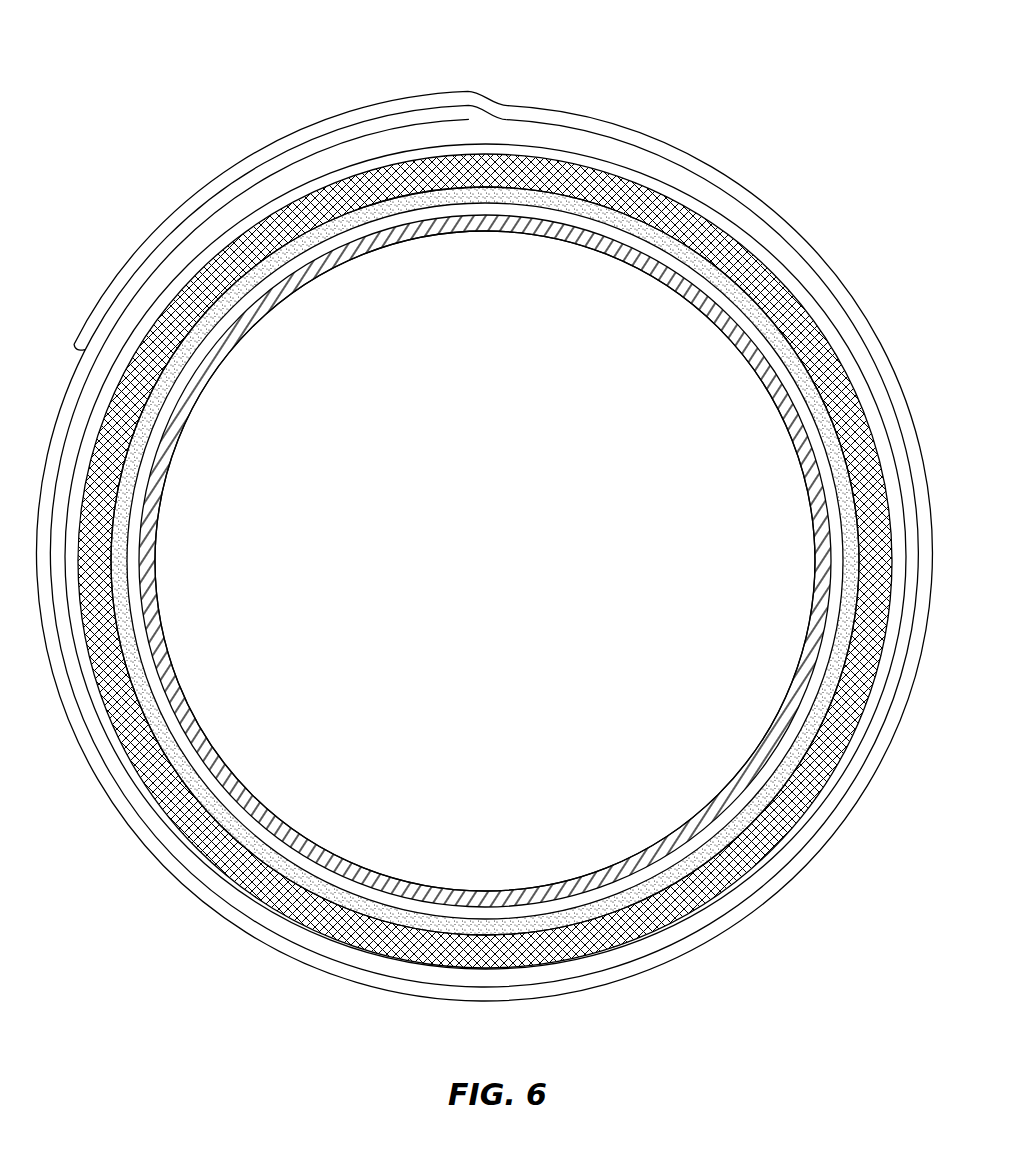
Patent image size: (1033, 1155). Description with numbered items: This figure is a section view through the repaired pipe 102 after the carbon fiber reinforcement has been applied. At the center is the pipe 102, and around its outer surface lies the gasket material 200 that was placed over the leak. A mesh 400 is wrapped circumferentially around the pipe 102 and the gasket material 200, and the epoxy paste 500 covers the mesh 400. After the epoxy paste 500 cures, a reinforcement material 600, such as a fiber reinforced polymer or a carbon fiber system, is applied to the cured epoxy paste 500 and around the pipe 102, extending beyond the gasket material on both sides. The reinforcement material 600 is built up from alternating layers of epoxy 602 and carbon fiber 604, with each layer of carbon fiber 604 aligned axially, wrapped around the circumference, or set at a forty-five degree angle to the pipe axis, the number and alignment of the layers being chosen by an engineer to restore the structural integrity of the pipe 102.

The reinforcement material 600 is at (853, 154).
The pipe 102 is at (478, 893).
The gasket material 200 is at (707, 852).
The mesh 400 is at (597, 925).
The epoxy paste 500 is at (410, 955).
The epoxy 602 is at (360, 125).
The carbon fiber 604 is at (520, 100).